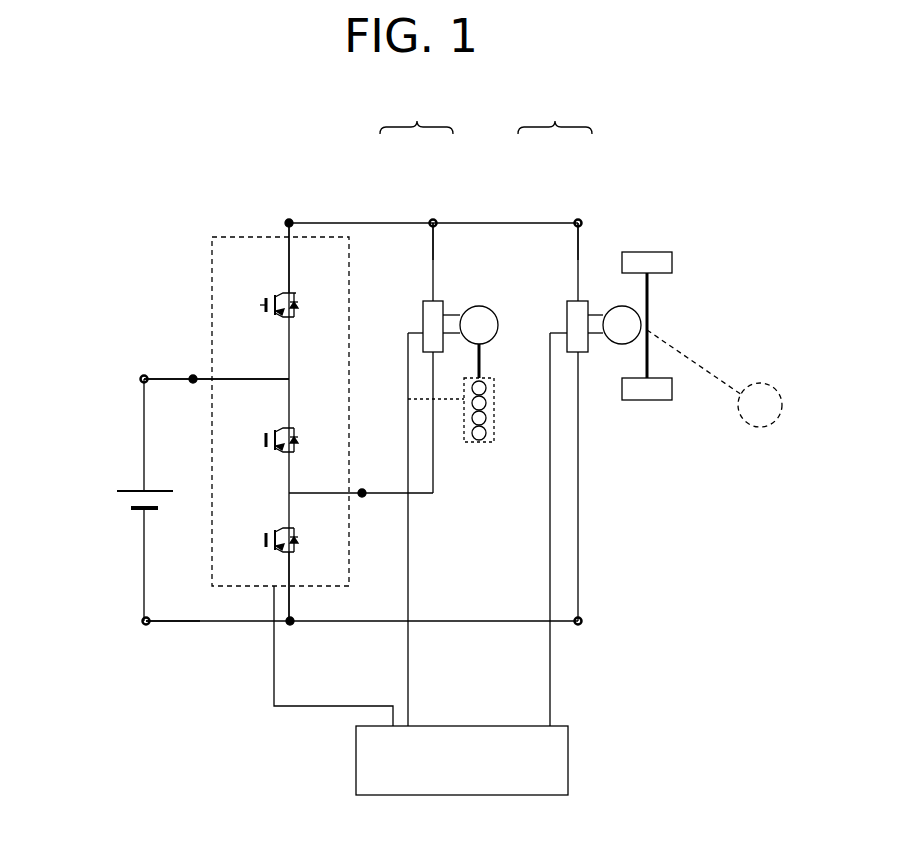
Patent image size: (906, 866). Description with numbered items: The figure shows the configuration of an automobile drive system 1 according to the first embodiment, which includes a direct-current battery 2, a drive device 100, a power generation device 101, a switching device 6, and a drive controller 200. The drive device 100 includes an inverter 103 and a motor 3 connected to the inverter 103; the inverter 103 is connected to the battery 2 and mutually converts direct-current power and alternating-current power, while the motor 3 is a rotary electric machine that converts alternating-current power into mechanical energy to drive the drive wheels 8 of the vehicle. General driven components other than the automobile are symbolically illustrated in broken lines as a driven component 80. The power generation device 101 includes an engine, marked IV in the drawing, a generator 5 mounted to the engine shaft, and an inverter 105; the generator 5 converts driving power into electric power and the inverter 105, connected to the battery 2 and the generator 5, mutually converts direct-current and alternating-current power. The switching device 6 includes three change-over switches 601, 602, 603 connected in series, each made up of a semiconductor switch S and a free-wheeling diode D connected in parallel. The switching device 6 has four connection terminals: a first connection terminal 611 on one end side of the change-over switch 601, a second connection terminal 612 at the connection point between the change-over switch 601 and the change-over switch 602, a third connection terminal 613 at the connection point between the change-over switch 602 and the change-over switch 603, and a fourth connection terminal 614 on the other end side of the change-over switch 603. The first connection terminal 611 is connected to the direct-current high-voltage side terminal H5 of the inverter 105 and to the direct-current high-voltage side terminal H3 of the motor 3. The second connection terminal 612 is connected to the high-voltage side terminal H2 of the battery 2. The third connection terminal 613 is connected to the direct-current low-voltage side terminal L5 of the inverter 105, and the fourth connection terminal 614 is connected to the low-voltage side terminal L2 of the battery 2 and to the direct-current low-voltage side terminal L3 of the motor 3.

The automobile drive system 1 is at (95, 134).
The direct-current battery 2 is at (130, 491).
The motor 3 is at (617, 305).
The generator 5 is at (470, 304).
The switching device 6 is at (257, 236).
The drive wheels 8 is at (648, 300).
The driven component 80 is at (762, 385).
The drive device 100 is at (555, 114).
The power generation device 101 is at (416, 114).
The inverter 103 is at (573, 300).
The inverter 105 is at (430, 300).
The drive controller 200 is at (560, 730).
The change-over switch 601 is at (265, 285).
The change-over switch 602 is at (270, 458).
The change-over switch 603 is at (270, 555).
The first connection terminal 611 is at (285, 220).
The second connection terminal 612 is at (193, 378).
The third connection terminal 613 is at (362, 493).
The fourth connection terminal 614 is at (291, 625).
The high-voltage side terminal H2 is at (144, 379).
The low-voltage side terminal L2 is at (146, 621).
The direct-current high-voltage side terminal H3 is at (578, 223).
The direct-current low-voltage side terminal L3 is at (578, 621).
The direct-current high-voltage side terminal H5 is at (433, 223).
The direct-current low-voltage side terminal L5 is at (433, 493).
The semiconductor switch S is at (267, 314).
The free-wheeling diode D is at (299, 303).
The internal combustion engine IV is at (494, 442).